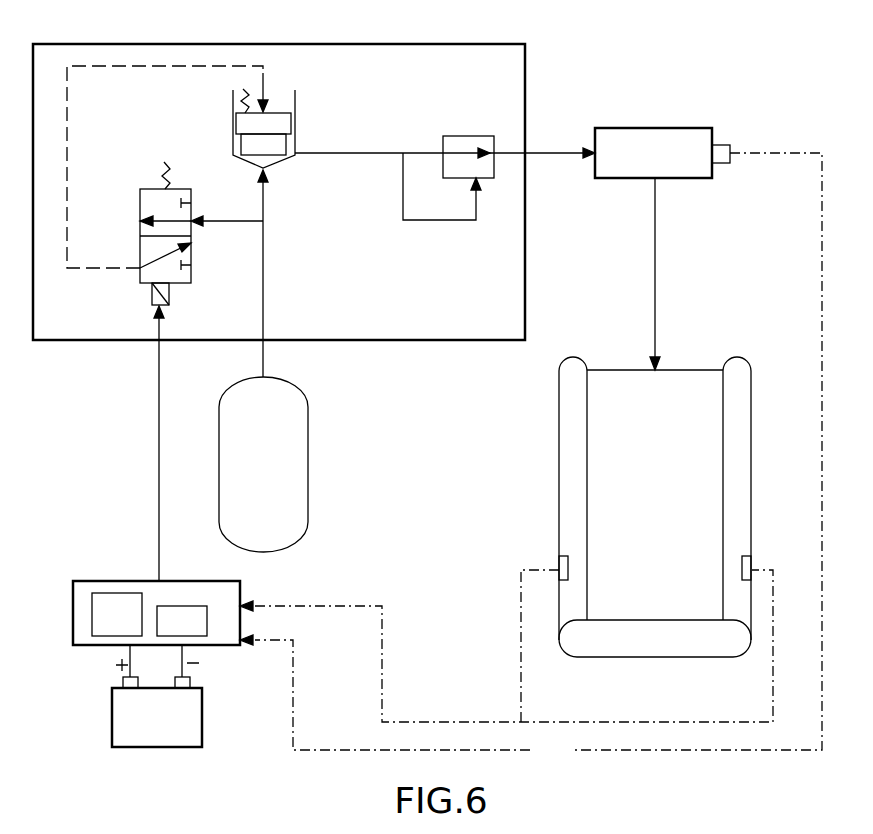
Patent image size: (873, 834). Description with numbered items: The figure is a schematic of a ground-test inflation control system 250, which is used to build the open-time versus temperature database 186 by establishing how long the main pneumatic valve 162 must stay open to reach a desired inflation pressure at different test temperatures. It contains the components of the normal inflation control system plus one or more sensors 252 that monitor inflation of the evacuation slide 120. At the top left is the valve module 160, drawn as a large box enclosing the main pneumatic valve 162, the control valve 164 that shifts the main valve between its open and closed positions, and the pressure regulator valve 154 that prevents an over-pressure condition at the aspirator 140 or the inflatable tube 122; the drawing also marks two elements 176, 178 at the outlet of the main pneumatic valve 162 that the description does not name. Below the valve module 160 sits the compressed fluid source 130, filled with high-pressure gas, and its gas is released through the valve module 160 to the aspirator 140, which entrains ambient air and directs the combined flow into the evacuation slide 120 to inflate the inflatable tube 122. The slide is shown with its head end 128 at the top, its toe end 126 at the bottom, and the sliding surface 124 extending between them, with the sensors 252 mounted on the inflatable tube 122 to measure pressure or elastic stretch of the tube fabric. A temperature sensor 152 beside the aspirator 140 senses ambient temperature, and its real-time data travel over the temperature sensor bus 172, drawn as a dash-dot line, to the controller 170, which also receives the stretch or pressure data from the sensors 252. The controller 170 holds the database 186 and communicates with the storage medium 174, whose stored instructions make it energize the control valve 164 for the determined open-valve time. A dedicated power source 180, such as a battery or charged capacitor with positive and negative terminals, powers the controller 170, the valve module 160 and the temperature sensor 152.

The ground-test inflation control system 250 is at (762, 78).
The valve module 160 is at (397, 341).
The control valve 164 is at (147, 189).
The main pneumatic valve 162 is at (296, 118).
The supply line 176 is at (263, 168).
The outlet line 178 is at (296, 155).
The pressure regulator valve 154 is at (458, 143).
The aspirator 140 is at (655, 136).
The temperature sensor 152 is at (728, 146).
The temperature sensor bus 172 is at (531, 456).
The compressed fluid source 130 is at (246, 473).
The evacuation slide 120 is at (648, 486).
The inflatable tube 122 is at (570, 473).
The sliding surface 124 is at (643, 482).
The head end 128 is at (608, 370).
The toe end 126 is at (633, 645).
The sensor 252 is at (562, 562).
The controller 170 is at (156, 580).
The open-time versus temperature database 186 is at (102, 625).
The storage medium 174 is at (167, 632).
The power source 180 is at (142, 727).